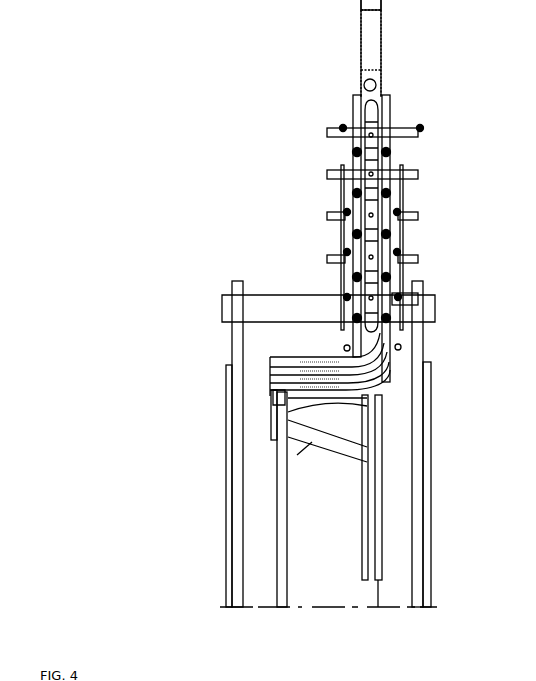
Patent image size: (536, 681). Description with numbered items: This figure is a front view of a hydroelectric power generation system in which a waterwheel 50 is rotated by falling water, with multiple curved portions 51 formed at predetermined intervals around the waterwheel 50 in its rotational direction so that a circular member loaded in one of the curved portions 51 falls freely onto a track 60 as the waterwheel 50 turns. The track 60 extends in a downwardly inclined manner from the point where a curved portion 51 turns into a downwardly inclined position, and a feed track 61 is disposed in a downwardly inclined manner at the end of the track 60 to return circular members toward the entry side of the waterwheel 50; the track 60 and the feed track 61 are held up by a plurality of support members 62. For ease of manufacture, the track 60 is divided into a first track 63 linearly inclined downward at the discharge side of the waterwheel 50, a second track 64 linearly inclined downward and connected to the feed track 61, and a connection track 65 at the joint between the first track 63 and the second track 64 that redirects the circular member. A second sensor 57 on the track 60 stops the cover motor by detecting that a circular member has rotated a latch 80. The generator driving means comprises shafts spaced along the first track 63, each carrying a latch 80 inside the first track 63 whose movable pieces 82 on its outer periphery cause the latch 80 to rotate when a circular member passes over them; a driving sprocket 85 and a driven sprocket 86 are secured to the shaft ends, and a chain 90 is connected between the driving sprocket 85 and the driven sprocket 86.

The waterwheel 50 is at (378, 37).
The curved portions 51 is at (383, 3).
The movable pieces 82 is at (376, 82).
The latch 80 is at (392, 158).
The driving sprocket 85 is at (347, 168).
The chain 90 is at (347, 187).
The driven sprocket 86 is at (347, 218).
The support members 62 is at (375, 543).
The second sensor 57 is at (343, 348).
The feed track 61 is at (290, 452).
The track 60 is at (396, 372).
The first track 63 is at (392, 336).
The connection track 65 is at (392, 352).
The second track 64 is at (367, 406).